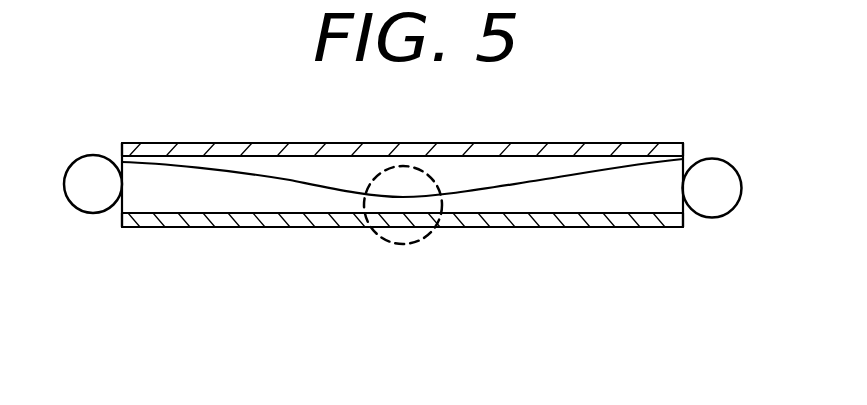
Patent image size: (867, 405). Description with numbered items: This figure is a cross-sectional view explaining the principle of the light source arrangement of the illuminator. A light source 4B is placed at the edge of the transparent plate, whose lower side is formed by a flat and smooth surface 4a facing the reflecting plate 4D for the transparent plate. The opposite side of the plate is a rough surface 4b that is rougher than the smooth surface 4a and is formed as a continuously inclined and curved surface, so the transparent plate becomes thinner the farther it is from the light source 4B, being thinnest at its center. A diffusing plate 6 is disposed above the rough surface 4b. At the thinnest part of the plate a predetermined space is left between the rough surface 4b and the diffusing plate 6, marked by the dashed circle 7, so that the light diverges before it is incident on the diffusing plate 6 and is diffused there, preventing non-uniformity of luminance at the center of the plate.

The diffusing plate 6 is at (518, 143).
The smooth surface 4a is at (583, 228).
The reflecting plate for transparent plate 4D is at (267, 228).
The rough surface 4b is at (191, 167).
The light source 4B is at (82, 202).
The contact region 7 is at (425, 242).